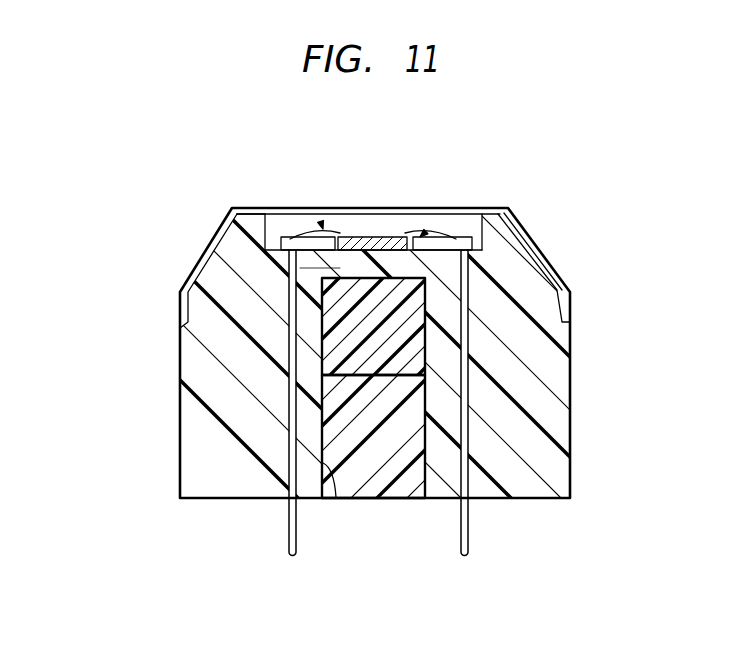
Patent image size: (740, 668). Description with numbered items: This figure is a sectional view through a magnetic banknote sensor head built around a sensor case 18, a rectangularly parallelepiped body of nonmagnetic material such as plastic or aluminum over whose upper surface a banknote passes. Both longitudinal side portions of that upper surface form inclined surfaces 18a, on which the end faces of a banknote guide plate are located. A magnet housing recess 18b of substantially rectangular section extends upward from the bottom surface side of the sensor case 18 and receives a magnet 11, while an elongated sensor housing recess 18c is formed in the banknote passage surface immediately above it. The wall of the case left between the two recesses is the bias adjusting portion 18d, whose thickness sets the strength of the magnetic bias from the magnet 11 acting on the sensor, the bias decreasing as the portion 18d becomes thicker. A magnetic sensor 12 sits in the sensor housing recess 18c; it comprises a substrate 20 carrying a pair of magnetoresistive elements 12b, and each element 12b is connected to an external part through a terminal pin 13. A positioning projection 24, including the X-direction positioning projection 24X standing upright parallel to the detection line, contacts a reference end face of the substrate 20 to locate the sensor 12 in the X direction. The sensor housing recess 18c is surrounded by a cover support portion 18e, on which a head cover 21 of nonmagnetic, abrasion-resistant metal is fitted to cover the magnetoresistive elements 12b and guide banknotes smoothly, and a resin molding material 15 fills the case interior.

The magnet 11 is at (370, 347).
The magnetic sensor 12 is at (422, 234).
The magnetoresistive element 12b is at (353, 231).
The terminal pin 13 is at (288, 552).
The resin molding material 15 is at (407, 481).
The sensor case 18 is at (192, 463).
The inclined surface 18a is at (206, 257).
The magnet housing recess 18b is at (338, 497).
The sensor housing recess 18c is at (474, 209).
The bias adjusting portion 18d is at (326, 268).
The cover support portion 18e is at (253, 210).
The substrate 20 is at (376, 236).
The head cover 21 is at (544, 240).
The positioning projection 24 is at (289, 212).
The X-direction positioning projection 24X is at (322, 226).